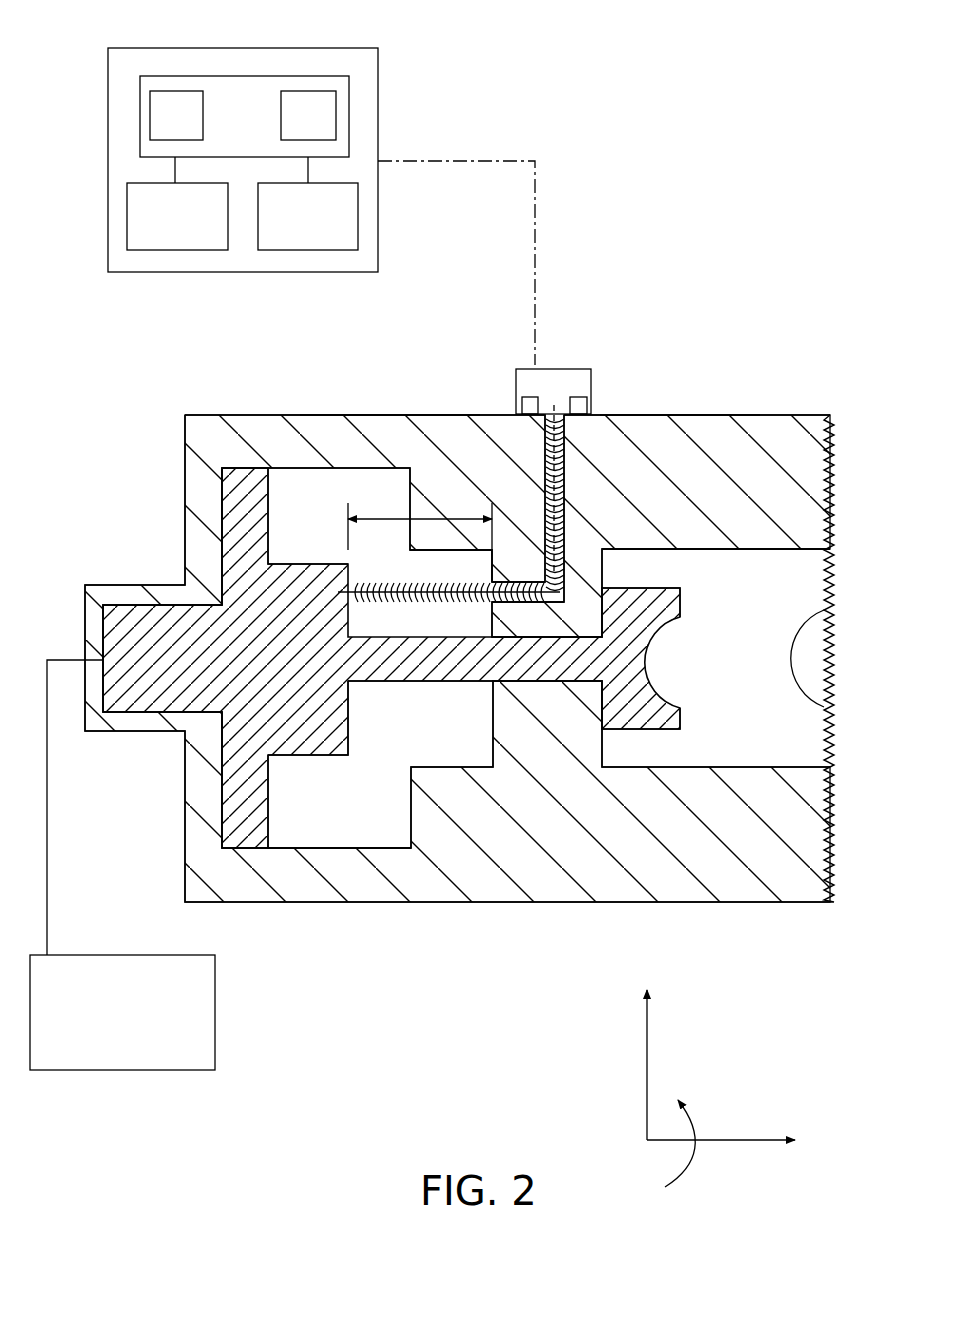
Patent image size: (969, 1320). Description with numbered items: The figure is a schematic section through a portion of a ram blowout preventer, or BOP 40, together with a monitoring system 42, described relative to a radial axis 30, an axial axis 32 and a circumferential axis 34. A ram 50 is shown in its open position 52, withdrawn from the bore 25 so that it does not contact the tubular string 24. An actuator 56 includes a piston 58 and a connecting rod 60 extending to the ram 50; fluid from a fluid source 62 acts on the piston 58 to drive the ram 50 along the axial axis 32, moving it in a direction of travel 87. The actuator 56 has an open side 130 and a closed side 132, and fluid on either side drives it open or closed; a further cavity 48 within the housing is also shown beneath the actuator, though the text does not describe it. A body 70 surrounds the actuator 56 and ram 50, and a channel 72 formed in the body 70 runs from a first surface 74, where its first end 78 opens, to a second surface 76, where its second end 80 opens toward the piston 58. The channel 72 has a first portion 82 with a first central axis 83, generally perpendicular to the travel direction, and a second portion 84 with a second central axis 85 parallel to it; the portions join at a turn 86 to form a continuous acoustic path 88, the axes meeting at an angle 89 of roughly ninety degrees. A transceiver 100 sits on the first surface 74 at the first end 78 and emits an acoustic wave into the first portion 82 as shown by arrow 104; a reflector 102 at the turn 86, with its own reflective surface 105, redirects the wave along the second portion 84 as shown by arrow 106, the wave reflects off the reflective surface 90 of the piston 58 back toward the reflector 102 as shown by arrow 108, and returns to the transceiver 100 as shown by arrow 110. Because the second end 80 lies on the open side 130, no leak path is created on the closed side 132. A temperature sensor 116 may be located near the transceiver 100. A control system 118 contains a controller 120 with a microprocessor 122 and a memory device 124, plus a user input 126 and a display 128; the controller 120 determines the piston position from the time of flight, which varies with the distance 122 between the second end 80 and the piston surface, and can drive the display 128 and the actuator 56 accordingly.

The tubular string 24 is at (795, 630).
The bore 25 is at (745, 666).
The radial axis 30 is at (647, 1080).
The axial axis 32 is at (715, 1140).
The circumferential axis 34 is at (690, 1175).
The BOP 40 is at (238, 372).
The monitoring system 42 is at (630, 390).
The lower cavity 48 is at (325, 770).
The ram 50 is at (655, 588).
The open position 52 is at (680, 530).
The actuator 56 is at (290, 528).
The piston 58 is at (280, 563).
The connecting rod 60 is at (410, 682).
The fluid source 62 is at (215, 1015).
The body 70 is at (680, 414).
The channel 72 is at (587, 500).
The first surface 74 is at (472, 414).
The second surface 76 is at (490, 553).
The first end 78 is at (577, 434).
The second end 80 is at (505, 583).
The first portion 82 is at (590, 574).
The first central axis 83 is at (545, 500).
The second portion 84 is at (513, 575).
The second central axis 85 is at (447, 583).
The turn 86 is at (580, 603).
The direction of travel 87 is at (333, 658).
The acoustic path 88 is at (565, 580).
The angle 89 is at (545, 570).
The reflective surface 90 is at (373, 583).
The transceiver 100 is at (556, 369).
The reflector 102 is at (560, 597).
The arrow 104 is at (527, 482).
The reflective surface 105 is at (530, 585).
The arrow 106 is at (487, 612).
The arrow 108 is at (415, 612).
The arrow 110 is at (580, 462).
The temperature sensor 116 is at (530, 398).
The control system 118 is at (243, 272).
The controller 120 is at (349, 87).
The microprocessor 122 is at (177, 90).
The memory device 124 is at (308, 90).
The user input 126 is at (127, 210).
The display 128 is at (358, 210).
The open side 130 is at (427, 487).
The closed side 132 is at (150, 528).